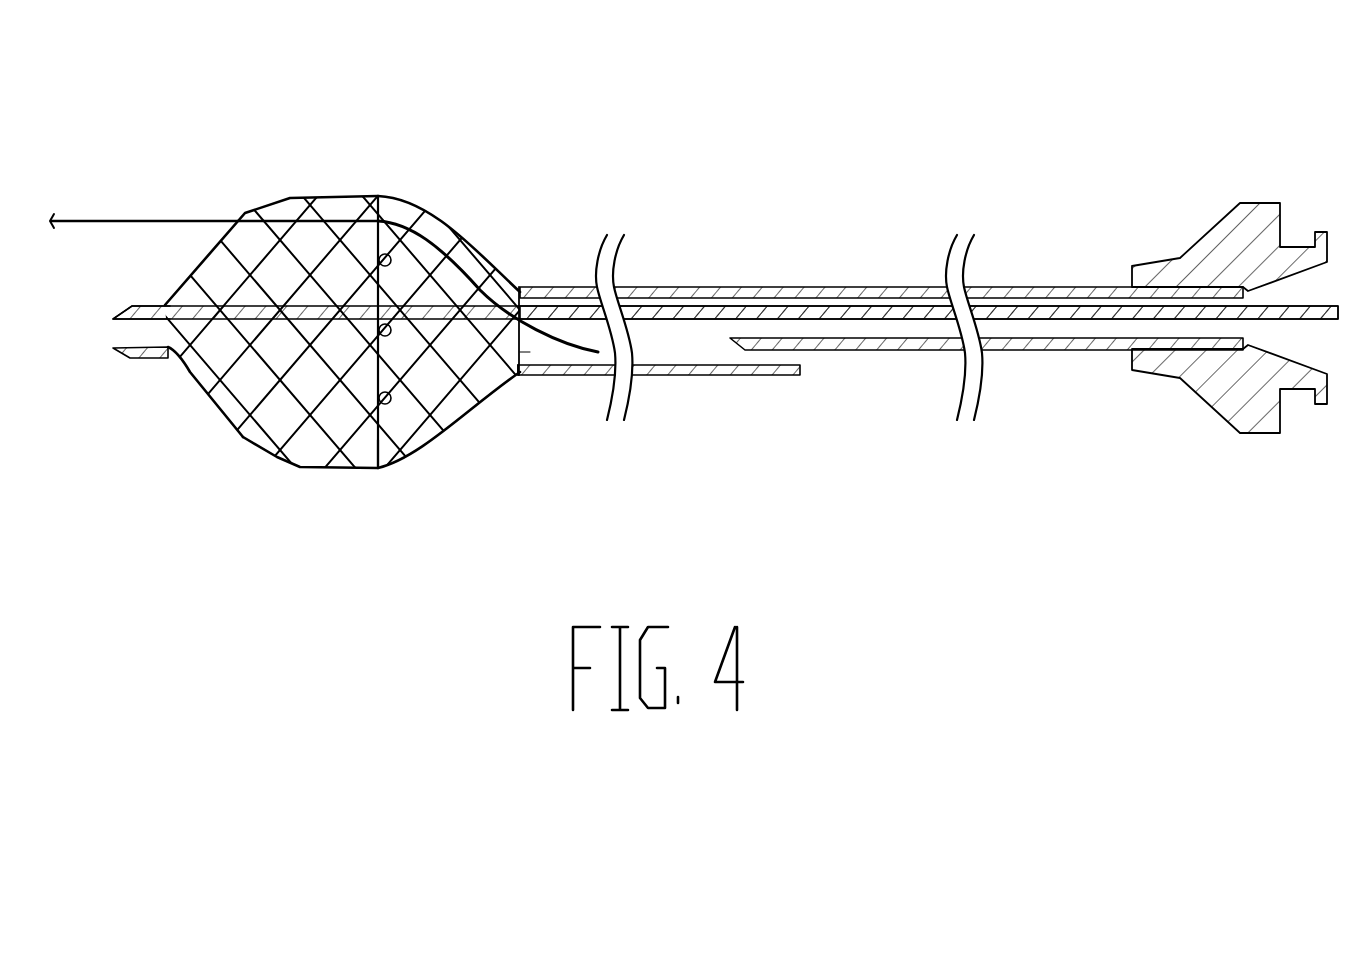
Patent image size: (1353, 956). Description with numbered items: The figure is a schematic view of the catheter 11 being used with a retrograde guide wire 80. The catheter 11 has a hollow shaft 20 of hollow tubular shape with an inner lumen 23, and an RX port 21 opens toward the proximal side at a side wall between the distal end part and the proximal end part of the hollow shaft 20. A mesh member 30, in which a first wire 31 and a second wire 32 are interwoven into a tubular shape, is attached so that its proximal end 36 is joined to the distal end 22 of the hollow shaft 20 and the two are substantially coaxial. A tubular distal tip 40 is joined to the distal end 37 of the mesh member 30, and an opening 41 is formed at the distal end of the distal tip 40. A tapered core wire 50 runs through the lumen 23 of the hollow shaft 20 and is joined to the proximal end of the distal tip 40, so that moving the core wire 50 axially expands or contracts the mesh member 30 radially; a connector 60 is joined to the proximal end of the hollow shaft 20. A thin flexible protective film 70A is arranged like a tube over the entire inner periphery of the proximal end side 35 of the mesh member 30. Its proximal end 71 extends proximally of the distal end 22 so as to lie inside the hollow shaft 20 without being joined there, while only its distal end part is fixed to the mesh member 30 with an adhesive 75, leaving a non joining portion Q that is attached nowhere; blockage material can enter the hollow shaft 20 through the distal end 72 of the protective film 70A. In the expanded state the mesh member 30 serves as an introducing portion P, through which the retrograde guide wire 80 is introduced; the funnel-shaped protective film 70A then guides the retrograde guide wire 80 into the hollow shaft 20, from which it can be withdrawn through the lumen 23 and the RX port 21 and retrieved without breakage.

The catheter 11 is at (888, 187).
The hollow shaft 20 is at (712, 287).
The RX port 21 is at (803, 358).
The distal end of the hollow shaft 22 is at (522, 288).
The inner lumen 23 is at (670, 350).
The mesh member 30 is at (292, 196).
The first wire 31 is at (352, 455).
The second wire 32 is at (405, 445).
The proximal end side of the mesh member 35 is at (472, 250).
The proximal end of the mesh member 36 is at (515, 375).
The distal end of the mesh member 37 is at (180, 362).
The distal tip 40 is at (153, 360).
The opening 41 is at (107, 338).
The core wire 50 is at (718, 322).
The connector 60 is at (1193, 378).
The protective film 70A is at (430, 238).
The proximal end of the protective film 71 is at (519, 352).
The distal end of the protective film 72 is at (375, 445).
The adhesive 75 is at (377, 257).
The retrograde guide wire 80 is at (115, 219).
The introducing portion P is at (246, 210).
The non joining portion Q is at (467, 433).